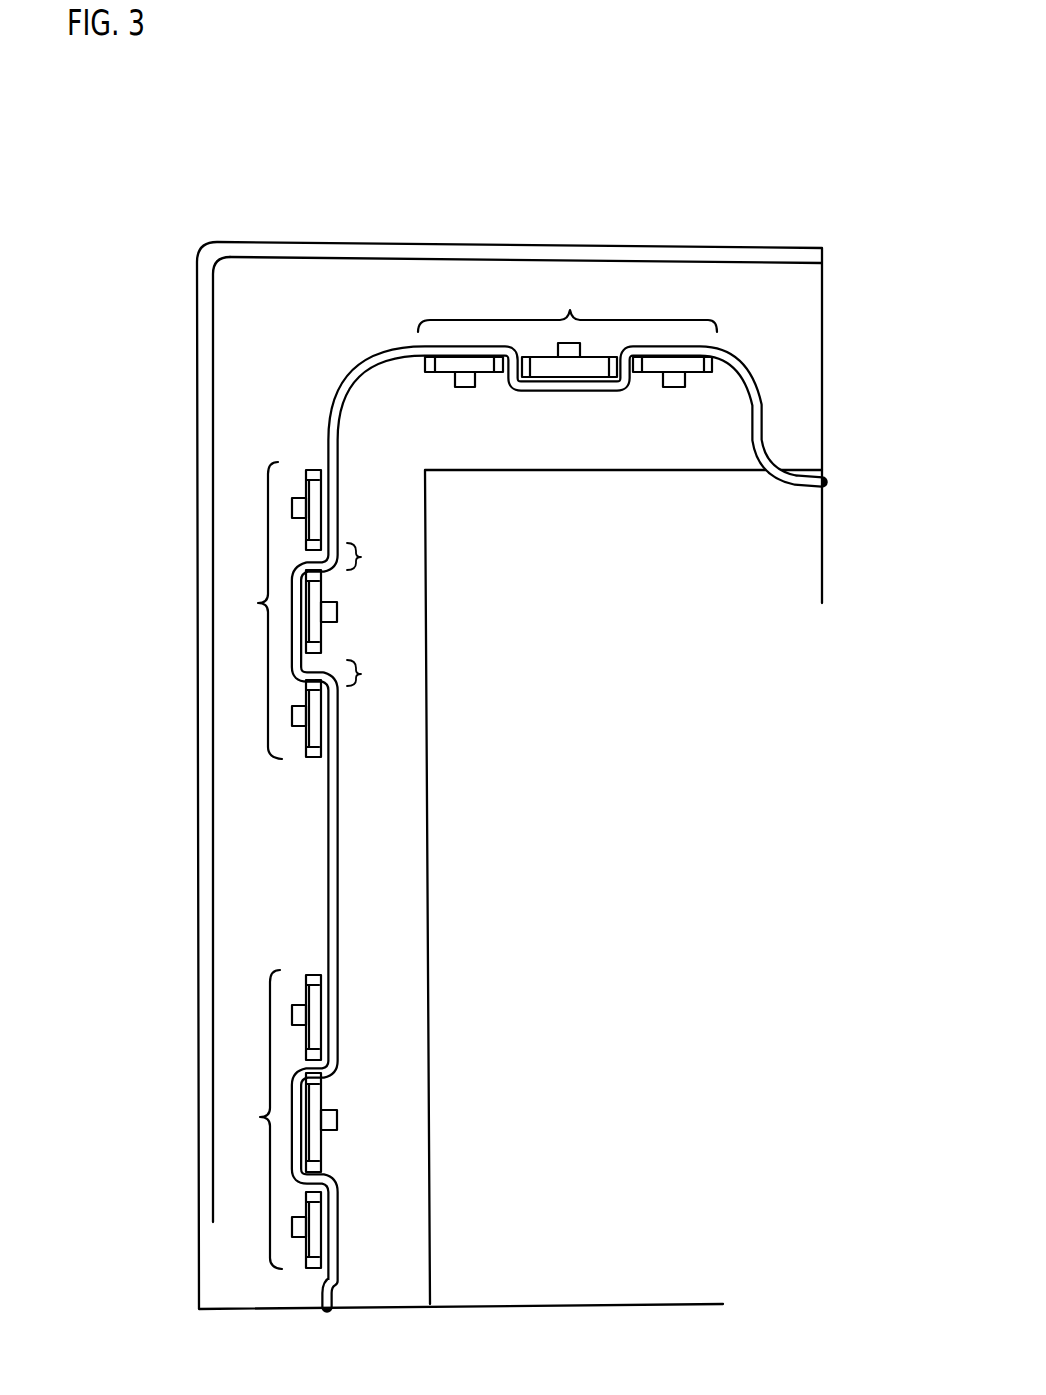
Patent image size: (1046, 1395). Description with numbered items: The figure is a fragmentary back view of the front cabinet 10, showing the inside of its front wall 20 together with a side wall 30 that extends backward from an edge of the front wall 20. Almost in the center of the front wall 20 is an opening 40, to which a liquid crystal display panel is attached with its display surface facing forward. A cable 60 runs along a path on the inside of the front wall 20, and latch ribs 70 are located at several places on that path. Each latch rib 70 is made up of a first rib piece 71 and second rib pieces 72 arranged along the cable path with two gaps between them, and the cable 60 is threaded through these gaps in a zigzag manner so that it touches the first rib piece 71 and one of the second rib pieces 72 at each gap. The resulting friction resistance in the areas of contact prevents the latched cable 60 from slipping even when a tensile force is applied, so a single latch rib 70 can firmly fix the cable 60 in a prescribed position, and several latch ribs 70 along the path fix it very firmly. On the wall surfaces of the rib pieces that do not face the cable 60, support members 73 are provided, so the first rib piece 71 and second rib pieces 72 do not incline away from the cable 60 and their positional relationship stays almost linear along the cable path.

The front cabinet 10 is at (415, 241).
The front wall 20 is at (740, 278).
The side wall 30 is at (285, 242).
The opening 40 is at (652, 473).
The cable 60 is at (325, 885).
The latch rib 70 is at (568, 296).
The first rib piece 71 is at (318, 587).
The second rib piece 72 is at (313, 470).
The support member 73 is at (291, 506).